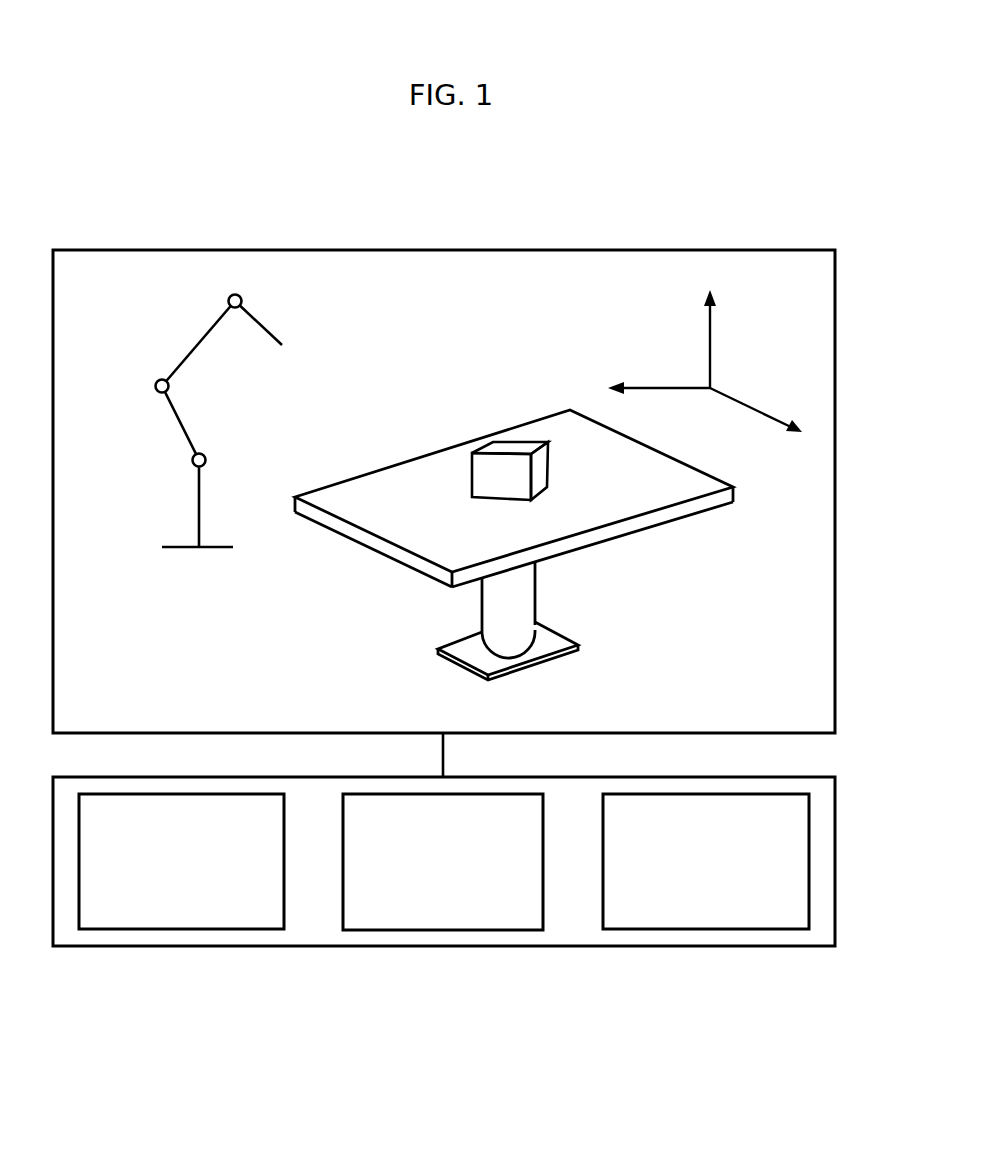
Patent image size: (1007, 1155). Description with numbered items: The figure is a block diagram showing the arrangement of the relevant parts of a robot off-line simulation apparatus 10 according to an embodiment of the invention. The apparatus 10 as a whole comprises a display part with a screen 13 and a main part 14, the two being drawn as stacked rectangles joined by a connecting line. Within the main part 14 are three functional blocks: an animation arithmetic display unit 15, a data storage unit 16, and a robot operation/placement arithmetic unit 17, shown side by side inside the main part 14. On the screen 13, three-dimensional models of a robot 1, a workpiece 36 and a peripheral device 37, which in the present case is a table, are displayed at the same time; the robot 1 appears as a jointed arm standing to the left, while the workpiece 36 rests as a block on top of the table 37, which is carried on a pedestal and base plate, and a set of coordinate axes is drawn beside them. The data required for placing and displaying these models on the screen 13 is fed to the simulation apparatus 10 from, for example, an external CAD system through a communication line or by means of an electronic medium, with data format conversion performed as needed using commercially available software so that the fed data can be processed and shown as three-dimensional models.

The robot 1 is at (185, 362).
The robot off-line simulation apparatus 10 is at (528, 224).
The screen 13 is at (836, 678).
The main part 14 is at (836, 858).
The animation arithmetic display unit 15 is at (183, 930).
The data storage unit 16 is at (443, 931).
The robot operation/placement arithmetic unit 17 is at (705, 930).
The workpiece 36 is at (511, 447).
The peripheral device 37 is at (658, 525).